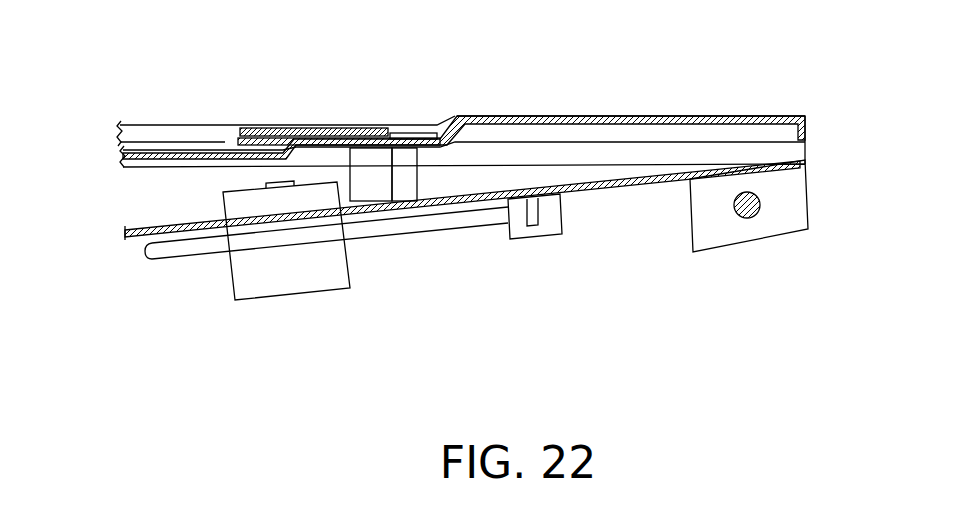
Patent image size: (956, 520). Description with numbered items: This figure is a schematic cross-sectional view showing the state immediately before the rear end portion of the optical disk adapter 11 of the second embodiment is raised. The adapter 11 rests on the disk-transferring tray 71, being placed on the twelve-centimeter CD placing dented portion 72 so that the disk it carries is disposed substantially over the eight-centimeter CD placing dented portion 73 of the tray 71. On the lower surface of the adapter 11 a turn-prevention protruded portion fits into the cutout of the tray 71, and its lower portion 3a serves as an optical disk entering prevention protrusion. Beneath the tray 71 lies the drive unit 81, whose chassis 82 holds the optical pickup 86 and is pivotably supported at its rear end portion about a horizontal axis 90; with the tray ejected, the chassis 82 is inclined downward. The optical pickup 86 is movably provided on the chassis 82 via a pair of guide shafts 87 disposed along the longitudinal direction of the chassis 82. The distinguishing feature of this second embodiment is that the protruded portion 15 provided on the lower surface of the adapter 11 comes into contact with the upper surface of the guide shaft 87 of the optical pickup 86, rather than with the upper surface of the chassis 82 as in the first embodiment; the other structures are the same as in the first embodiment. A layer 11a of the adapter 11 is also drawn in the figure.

The optical disk adapter 11 is at (197, 107).
The lower portion of the turn-prevention protruded portion 3a is at (226, 141).
The conductor portion 11a is at (298, 125).
The 12 cm-CD placing dented portion 72 is at (426, 133).
The disk-transferring tray 71 is at (583, 116).
The 8 cm-CD placing dented portion 73 is at (123, 147).
The protruded portion 15 is at (408, 182).
The drive unit 81 is at (612, 188).
The chassis 82 is at (479, 199).
The optical pickup 86 is at (288, 280).
The guide shaft 87 is at (383, 230).
The horizontal axis 90 is at (746, 216).